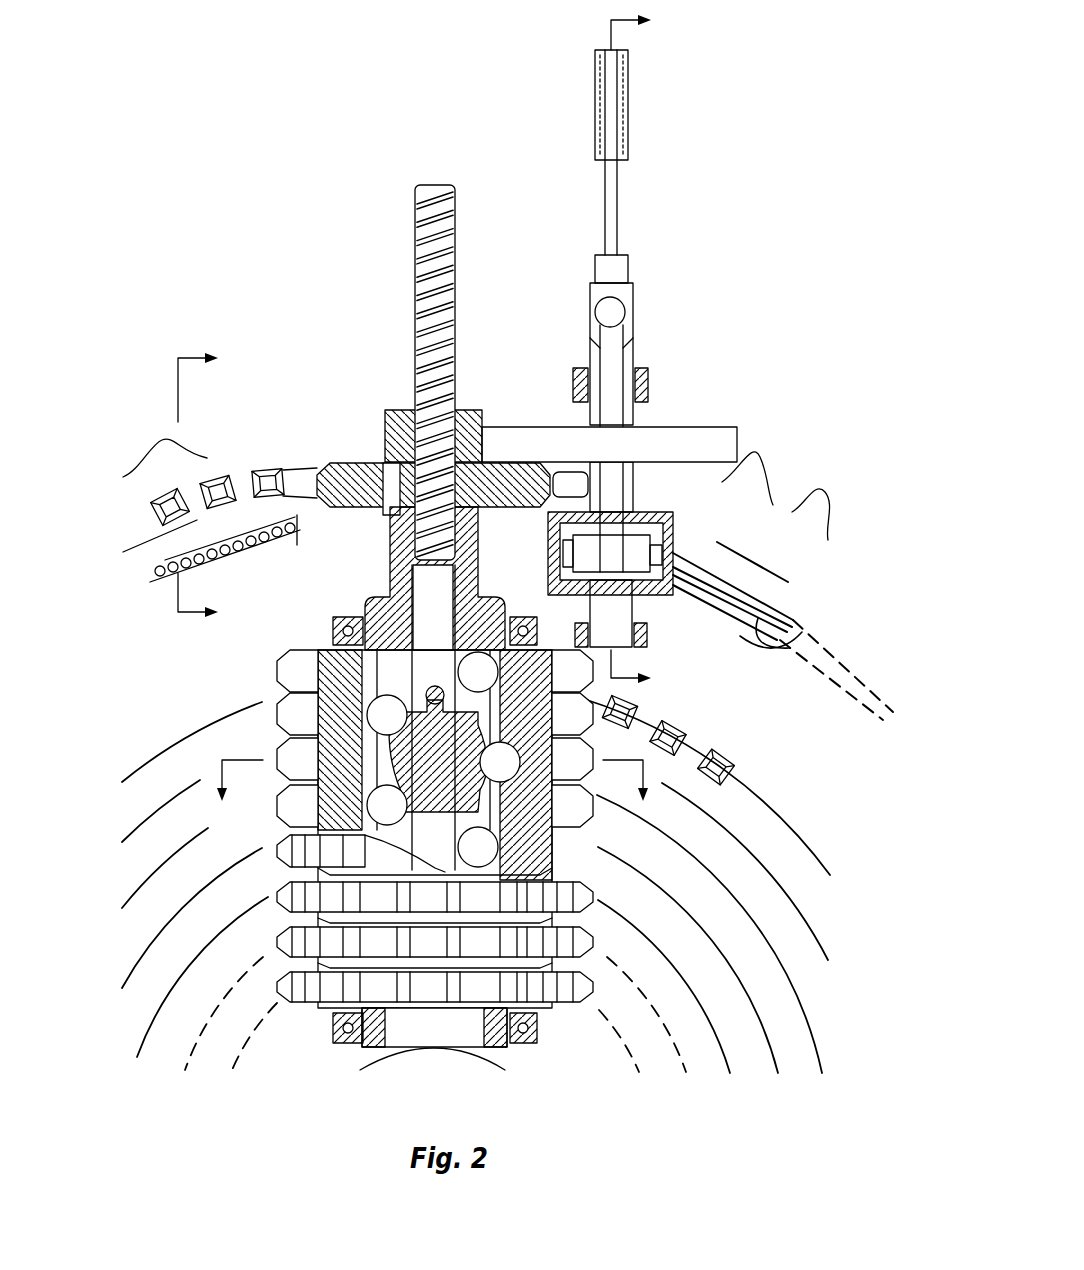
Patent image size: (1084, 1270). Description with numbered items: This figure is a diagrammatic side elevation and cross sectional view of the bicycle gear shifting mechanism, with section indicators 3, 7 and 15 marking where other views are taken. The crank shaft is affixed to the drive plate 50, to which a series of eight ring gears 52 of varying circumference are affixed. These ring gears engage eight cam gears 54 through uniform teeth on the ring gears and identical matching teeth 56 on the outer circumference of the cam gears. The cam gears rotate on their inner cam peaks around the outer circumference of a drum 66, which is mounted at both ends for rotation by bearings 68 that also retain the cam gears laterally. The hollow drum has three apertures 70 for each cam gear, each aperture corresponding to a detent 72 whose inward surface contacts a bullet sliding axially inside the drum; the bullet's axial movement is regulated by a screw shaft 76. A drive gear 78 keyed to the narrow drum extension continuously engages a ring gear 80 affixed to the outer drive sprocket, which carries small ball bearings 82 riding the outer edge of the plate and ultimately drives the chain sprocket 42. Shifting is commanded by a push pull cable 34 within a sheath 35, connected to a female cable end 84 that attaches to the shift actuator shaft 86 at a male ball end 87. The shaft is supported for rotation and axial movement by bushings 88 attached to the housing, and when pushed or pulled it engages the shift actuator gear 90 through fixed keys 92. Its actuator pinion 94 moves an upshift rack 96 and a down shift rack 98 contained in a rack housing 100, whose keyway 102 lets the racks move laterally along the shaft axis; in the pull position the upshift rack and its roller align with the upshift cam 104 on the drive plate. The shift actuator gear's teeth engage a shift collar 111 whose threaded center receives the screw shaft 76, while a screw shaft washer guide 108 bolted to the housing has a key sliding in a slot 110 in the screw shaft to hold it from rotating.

The section line 3- 3 is at (433, 790).
The section line 7- 7 is at (640, 350).
The section line 15- 15 is at (212, 486).
The push pull cable 34 is at (617, 212).
The sheath 35 is at (600, 133).
The chain sprocket 42 is at (162, 437).
The drive plate 50 is at (665, 1060).
The ring gears 52 is at (713, 808).
The cam gears 54 is at (330, 645).
The teeth 56 is at (300, 668).
The drum 66 is at (392, 565).
The bearings 68 is at (348, 615).
The apertures 70 is at (478, 637).
The detent 72 is at (380, 718).
The screw shaft 76 is at (432, 185).
The drive gear 78 is at (345, 463).
The ring gear 80 is at (150, 500).
The small ball bearings 82 is at (160, 580).
The cable end 84 is at (605, 270).
The shift actuator shaft 86 is at (615, 340).
The male ball end 87 is at (615, 310).
The bushings 88 is at (648, 385).
The shift actuator gear 90 is at (500, 430).
The fixed keys 92 is at (595, 355).
The actuator pinion 94 is at (673, 520).
The upshift rack 96 is at (563, 540).
The down shift rack 98 is at (575, 558).
The rack housing 100 is at (565, 575).
The keyway 102 is at (807, 645).
The upshift cam 104 is at (783, 603).
The screw shaft washer guide 108 is at (470, 420).
The slot 110 is at (415, 250).
The shift collar 111 is at (388, 465).